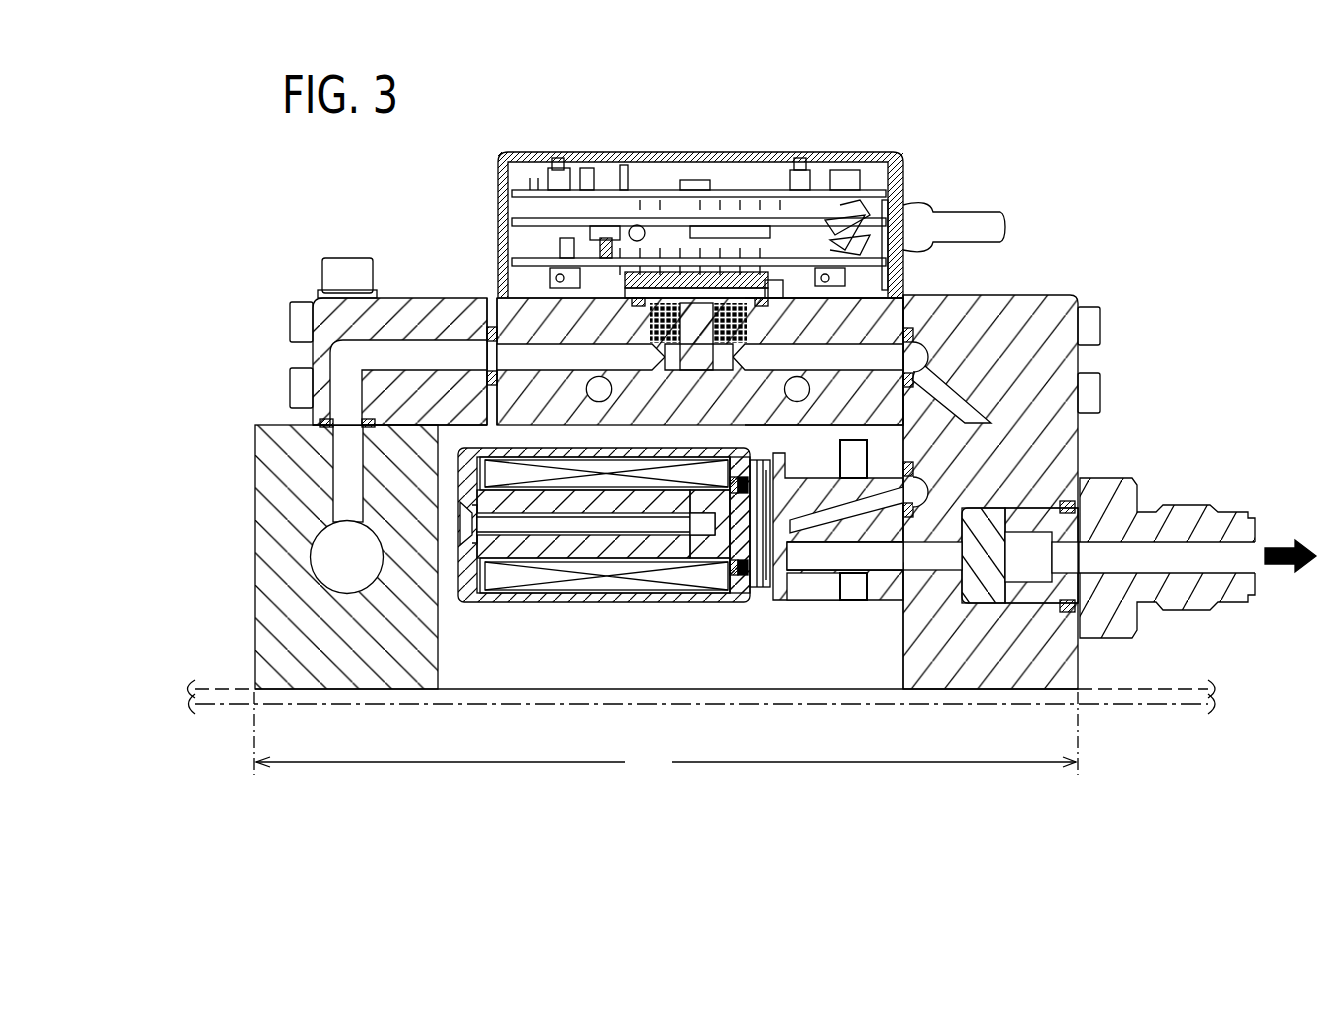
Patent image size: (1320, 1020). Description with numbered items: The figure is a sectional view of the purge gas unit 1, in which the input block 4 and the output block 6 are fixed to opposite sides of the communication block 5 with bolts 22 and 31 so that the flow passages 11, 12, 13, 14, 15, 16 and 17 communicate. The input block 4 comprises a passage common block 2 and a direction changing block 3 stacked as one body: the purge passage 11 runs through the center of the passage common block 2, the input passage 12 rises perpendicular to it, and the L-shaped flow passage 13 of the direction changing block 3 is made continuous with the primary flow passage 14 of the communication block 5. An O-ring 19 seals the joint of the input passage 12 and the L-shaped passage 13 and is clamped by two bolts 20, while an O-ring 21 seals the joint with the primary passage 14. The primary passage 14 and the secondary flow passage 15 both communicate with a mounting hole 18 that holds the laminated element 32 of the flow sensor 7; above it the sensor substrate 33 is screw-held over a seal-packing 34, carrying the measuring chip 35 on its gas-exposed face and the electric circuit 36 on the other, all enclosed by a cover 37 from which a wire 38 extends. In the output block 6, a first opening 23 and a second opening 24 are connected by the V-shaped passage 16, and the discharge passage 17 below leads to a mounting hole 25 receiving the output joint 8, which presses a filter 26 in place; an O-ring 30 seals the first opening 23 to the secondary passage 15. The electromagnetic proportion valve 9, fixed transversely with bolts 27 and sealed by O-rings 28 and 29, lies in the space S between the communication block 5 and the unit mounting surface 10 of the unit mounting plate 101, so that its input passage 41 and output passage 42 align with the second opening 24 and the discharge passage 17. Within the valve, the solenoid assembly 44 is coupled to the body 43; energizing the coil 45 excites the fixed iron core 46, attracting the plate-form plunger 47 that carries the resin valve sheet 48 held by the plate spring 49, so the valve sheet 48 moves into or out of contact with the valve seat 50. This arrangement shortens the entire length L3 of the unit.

The purge gas unit 1 is at (1120, 205).
The passage common block 2 is at (278, 466).
The direction changing block 3 is at (313, 413).
The input block 4 is at (192, 412).
The communication block 5 is at (520, 305).
The output block 6 is at (1060, 300).
The flow sensor 7 is at (925, 150).
The output joint 8 is at (1165, 515).
The electromagnetic proportion valve 9 is at (505, 610).
The unit mounting surface 10 is at (540, 689).
The purge passage 11 is at (335, 548).
The input passage 12 is at (345, 490).
The L-shaped flow passage 13 is at (345, 352).
The primary flow passage 14 is at (520, 352).
The secondary flow passage 15 is at (888, 357).
The V-shaped passage 16 is at (980, 427).
The discharge passage 17 is at (935, 568).
The mounting hole 18 is at (868, 308).
The O-ring 19 is at (325, 419).
The bolts 20 is at (352, 258).
The O-ring 21 is at (488, 334).
The bolts 22 is at (300, 316).
The first opening 23 is at (930, 362).
The second opening 24 is at (918, 488).
The mounting hole 25 is at (1020, 605).
The filter 26 is at (985, 595).
The bolts 27 is at (850, 595).
The O-ring 28 is at (915, 470).
The O-ring 29 is at (895, 573).
The O-ring 30 is at (915, 345).
The bolts 31 is at (1100, 322).
The laminated element 32 is at (747, 300).
The sensor substrate 33 is at (690, 290).
The seal-packing 34 is at (636, 300).
The measuring chip 35 is at (705, 292).
The electric circuit 36 is at (768, 300).
The cover 37 is at (870, 157).
The wire 38 is at (960, 216).
The input passage 41 is at (822, 530).
The output passage 42 is at (795, 573).
The body 43 is at (853, 585).
The solenoid assembly 44 is at (537, 602).
The coil 45 is at (615, 598).
The fixed iron core 46 is at (705, 600).
The plunger 47 is at (748, 598).
The valve sheet 48 is at (755, 603).
The plate spring 49 is at (762, 600).
The valve seat 50 is at (768, 575).
The unit mounting plate 101 is at (420, 700).
The space S is at (655, 675).
The entire length L3 is at (666, 733).